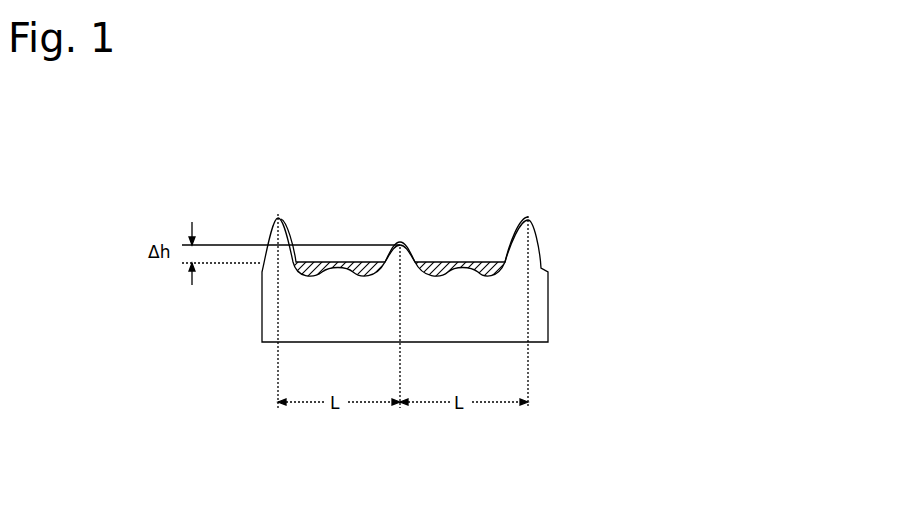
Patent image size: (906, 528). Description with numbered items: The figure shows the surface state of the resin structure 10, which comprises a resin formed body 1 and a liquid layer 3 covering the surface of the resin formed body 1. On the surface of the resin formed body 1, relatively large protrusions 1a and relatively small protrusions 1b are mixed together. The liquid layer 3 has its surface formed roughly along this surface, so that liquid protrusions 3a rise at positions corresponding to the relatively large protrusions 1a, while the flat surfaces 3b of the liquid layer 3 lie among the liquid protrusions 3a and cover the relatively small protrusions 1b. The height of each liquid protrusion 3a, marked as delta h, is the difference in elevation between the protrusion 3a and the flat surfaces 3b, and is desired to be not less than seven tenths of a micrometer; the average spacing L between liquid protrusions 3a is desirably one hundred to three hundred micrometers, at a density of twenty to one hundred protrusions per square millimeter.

The resin formed body 1 is at (493, 333).
The relatively large protrusions 1a is at (268, 268).
The relatively small protrusions 1b is at (338, 270).
The liquid layer 3 is at (497, 278).
The liquid protrusions 3a is at (278, 214).
The flat surfaces 3b is at (338, 262).
The resin structure 10 is at (557, 210).